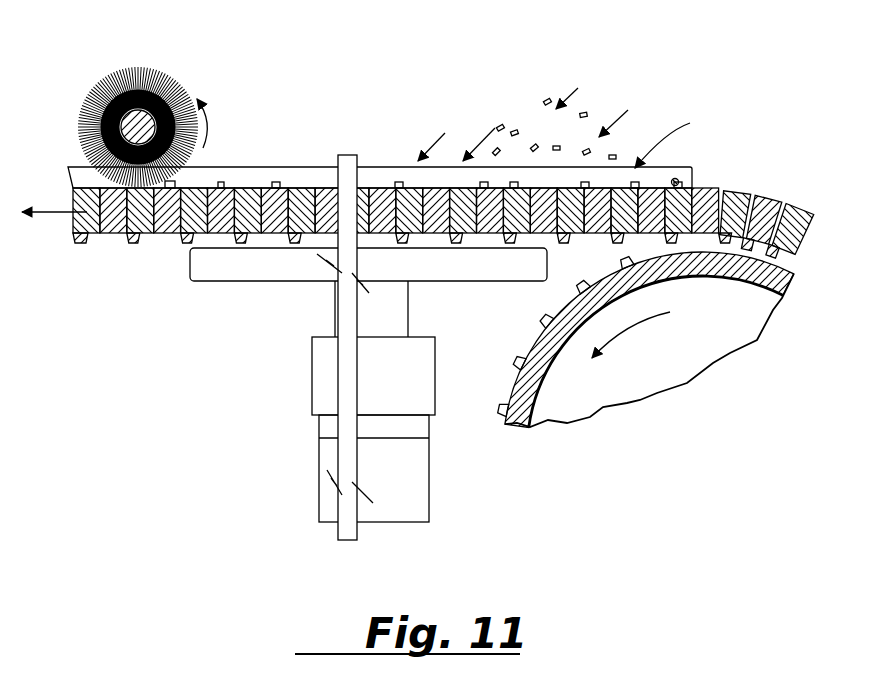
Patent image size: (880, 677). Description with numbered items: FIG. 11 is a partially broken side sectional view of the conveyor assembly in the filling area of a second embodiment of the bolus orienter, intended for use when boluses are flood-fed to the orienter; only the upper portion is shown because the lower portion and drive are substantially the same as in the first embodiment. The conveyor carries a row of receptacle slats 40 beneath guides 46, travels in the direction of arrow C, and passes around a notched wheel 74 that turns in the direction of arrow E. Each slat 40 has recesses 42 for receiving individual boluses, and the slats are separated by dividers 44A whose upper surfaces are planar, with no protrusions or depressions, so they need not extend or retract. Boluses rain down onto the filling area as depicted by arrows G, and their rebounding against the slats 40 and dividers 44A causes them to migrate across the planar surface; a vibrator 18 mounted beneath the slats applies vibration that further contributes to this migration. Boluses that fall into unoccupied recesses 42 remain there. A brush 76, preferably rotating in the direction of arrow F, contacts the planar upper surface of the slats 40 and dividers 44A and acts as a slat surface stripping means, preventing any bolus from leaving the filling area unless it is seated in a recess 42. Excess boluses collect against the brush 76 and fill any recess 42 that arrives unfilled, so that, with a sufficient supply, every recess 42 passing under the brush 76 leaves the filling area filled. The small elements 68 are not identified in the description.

The brush 76 is at (165, 82).
The guides 46 is at (293, 170).
The recesses 42 is at (242, 189).
The receptacle slats 40 is at (138, 228).
The dividers 44A is at (110, 224).
The vibrator 18 is at (215, 263).
The debris particles 68 is at (535, 121).
The notched wheel 74 is at (602, 400).
The direction of brush rotation F is at (207, 121).
The direction of travel of conveyor C is at (53, 216).
The direction of boluses raining down G is at (671, 139).
The direction of travel of notched wheel E is at (645, 325).